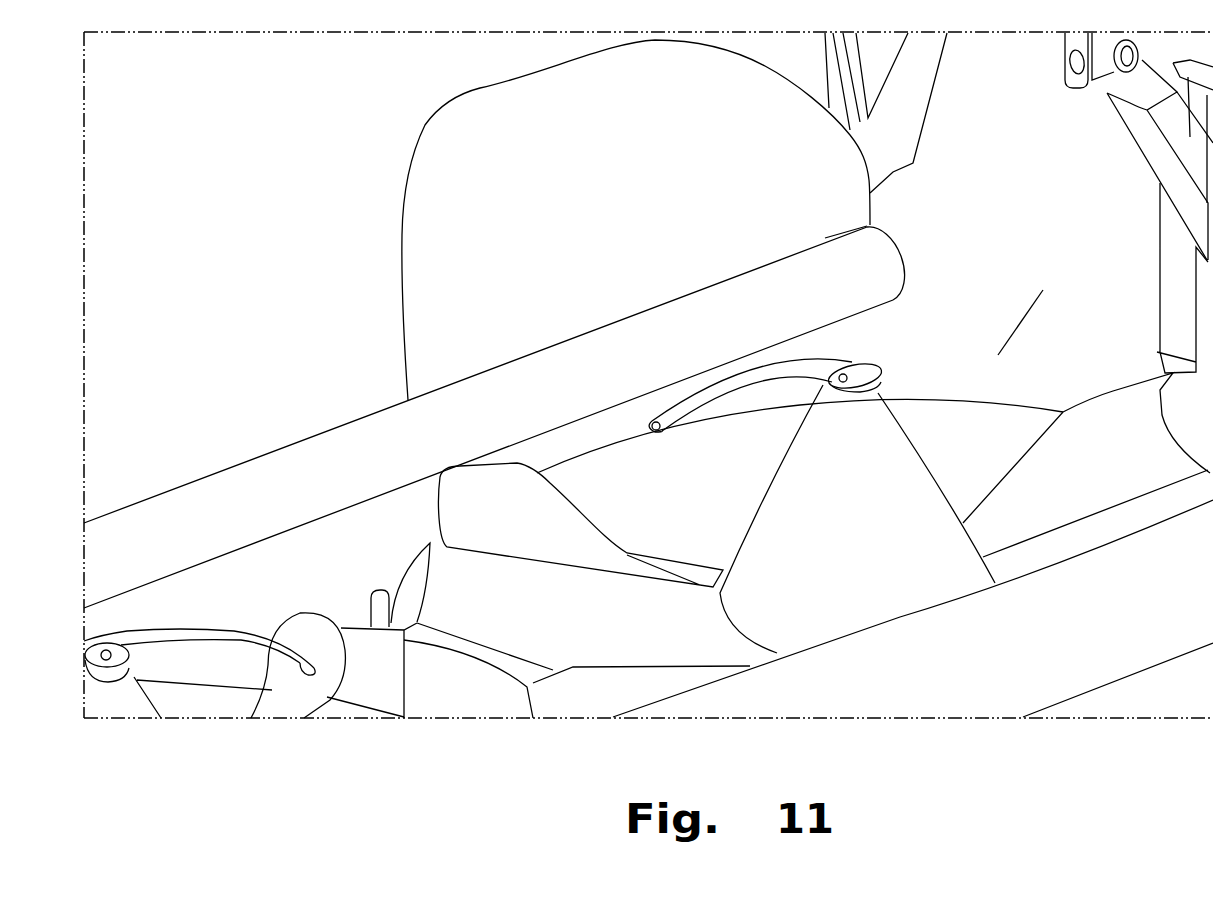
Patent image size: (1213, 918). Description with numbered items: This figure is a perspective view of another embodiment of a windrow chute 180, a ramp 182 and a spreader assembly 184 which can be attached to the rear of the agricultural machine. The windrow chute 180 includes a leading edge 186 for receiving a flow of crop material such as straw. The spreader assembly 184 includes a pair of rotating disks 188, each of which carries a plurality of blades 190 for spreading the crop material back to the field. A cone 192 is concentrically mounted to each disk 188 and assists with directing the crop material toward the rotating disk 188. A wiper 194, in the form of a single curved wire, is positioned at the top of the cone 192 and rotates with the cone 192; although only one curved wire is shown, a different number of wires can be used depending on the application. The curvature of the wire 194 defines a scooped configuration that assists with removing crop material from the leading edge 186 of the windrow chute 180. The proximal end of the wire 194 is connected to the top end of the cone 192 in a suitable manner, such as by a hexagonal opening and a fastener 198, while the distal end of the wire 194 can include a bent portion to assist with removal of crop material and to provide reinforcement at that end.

The windrow chute 180 is at (437, 307).
The ramp 182 is at (1007, 683).
The spreader assembly 184 is at (993, 362).
The leading edge 186 is at (875, 255).
The rotating disk 188 is at (1015, 415).
The blade 190 is at (593, 528).
The cone 192 is at (910, 437).
The wiper 194 is at (705, 380).
The fastener 198 is at (845, 374).